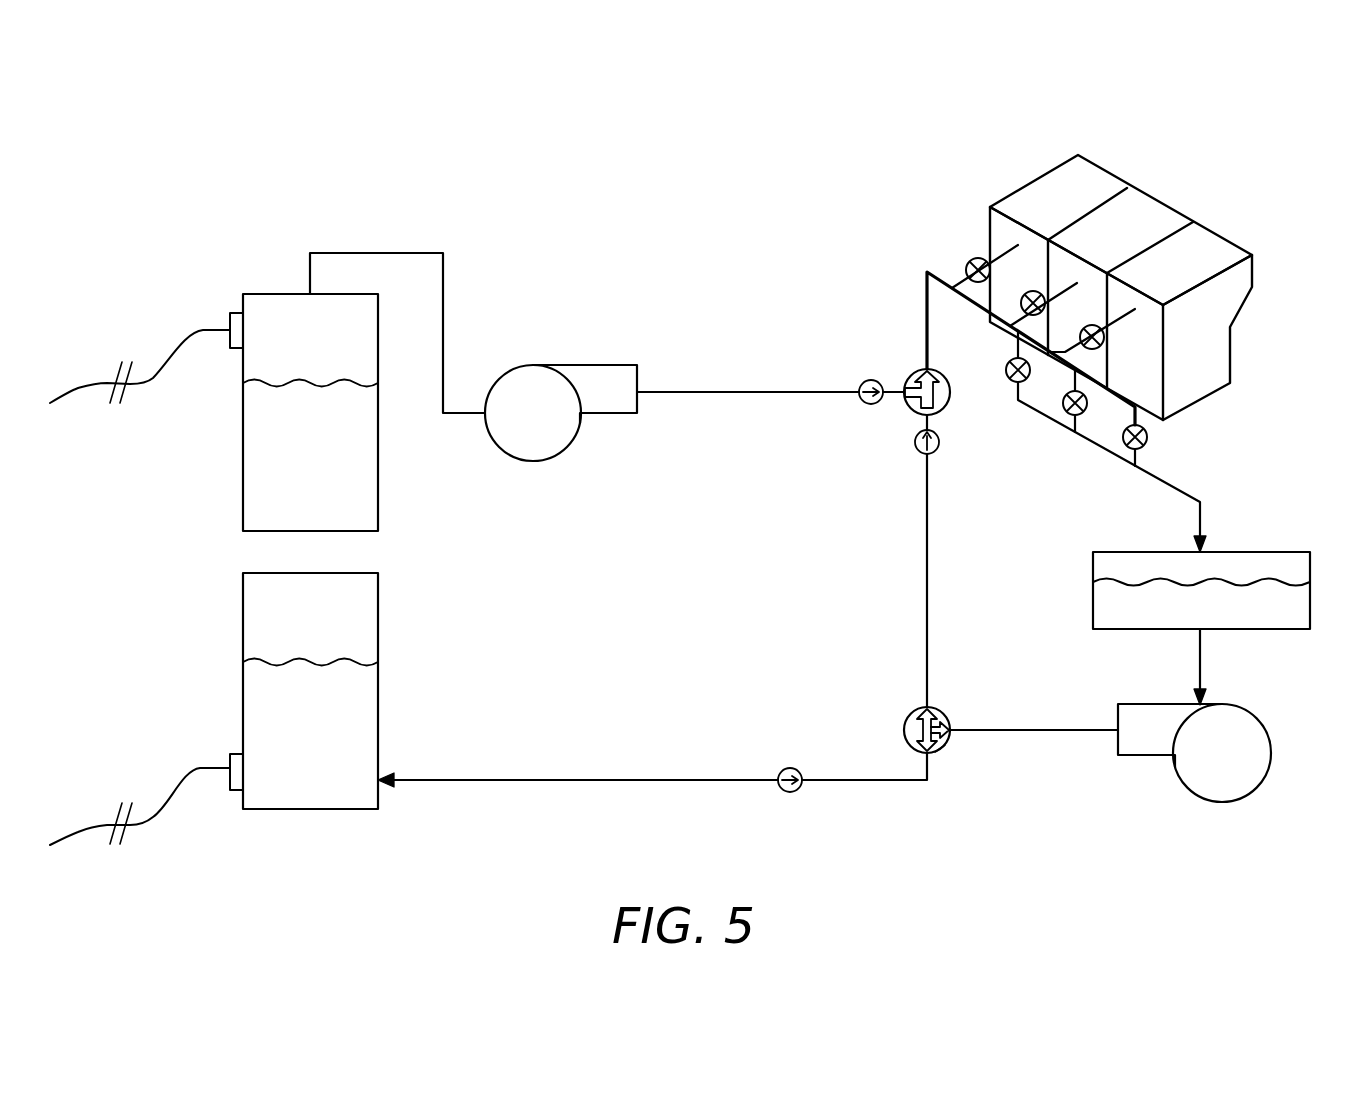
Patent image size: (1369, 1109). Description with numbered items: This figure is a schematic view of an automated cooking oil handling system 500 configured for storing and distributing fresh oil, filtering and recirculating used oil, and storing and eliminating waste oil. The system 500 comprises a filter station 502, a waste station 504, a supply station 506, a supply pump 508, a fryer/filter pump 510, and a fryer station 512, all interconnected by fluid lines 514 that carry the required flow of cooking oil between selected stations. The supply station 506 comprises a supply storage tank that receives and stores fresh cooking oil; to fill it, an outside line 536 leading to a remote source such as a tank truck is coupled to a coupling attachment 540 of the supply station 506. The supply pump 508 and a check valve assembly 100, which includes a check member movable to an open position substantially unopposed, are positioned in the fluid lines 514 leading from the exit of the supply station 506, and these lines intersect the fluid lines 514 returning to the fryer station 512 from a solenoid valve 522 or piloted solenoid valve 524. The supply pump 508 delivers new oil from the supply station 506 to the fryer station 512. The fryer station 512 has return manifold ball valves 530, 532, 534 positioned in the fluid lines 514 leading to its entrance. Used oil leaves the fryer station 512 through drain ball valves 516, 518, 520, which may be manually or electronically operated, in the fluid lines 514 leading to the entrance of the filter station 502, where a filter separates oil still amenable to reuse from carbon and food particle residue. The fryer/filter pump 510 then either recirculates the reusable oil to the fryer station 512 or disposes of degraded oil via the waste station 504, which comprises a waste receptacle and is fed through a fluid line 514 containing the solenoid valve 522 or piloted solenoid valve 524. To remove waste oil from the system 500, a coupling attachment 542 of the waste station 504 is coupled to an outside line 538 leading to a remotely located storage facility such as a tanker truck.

The check valve assembly 100 is at (912, 372).
The oil handling system 500 is at (1327, 103).
The filter station 502 is at (1093, 565).
The waste station 504 is at (243, 611).
The supply station 506 is at (243, 503).
The supply pump 508 is at (560, 456).
The fryer/filter pump 510 is at (1272, 750).
The fryer station 512 is at (1212, 243).
The fluid lines 514 is at (432, 253).
The drain ball valve 516 is at (1145, 448).
The drain ball valve 518 is at (1068, 417).
The drain ball valve 520 is at (1008, 380).
The solenoid valve 522 is at (905, 727).
The piloted solenoid valve 524 is at (942, 748).
The return manifold ball valve 530 is at (971, 258).
The return manifold ball valve 532 is at (1033, 290).
The return manifold ball valve 534 is at (1100, 348).
The outside line 536 is at (153, 384).
The outside line 538 is at (80, 831).
The coupling attachment 540 is at (229, 320).
The coupling attachment 542 is at (226, 785).